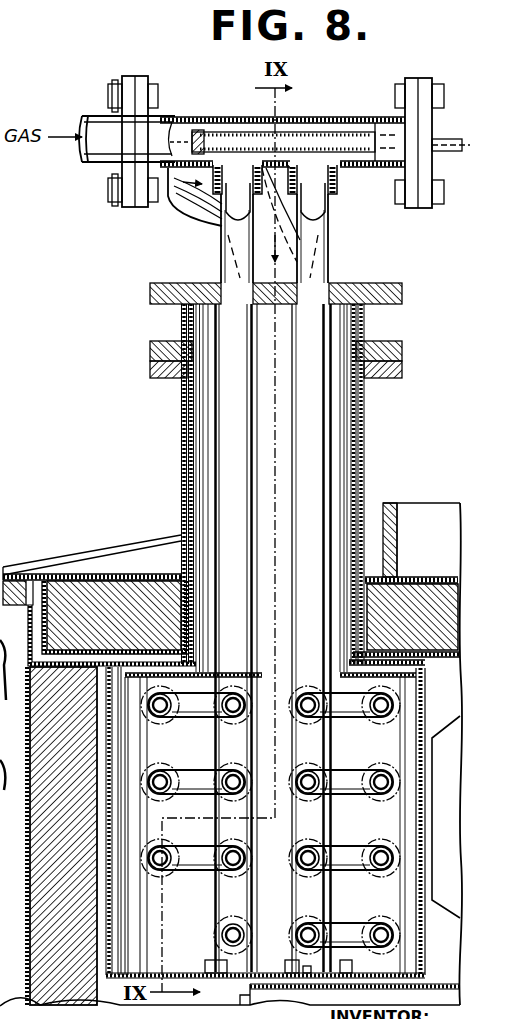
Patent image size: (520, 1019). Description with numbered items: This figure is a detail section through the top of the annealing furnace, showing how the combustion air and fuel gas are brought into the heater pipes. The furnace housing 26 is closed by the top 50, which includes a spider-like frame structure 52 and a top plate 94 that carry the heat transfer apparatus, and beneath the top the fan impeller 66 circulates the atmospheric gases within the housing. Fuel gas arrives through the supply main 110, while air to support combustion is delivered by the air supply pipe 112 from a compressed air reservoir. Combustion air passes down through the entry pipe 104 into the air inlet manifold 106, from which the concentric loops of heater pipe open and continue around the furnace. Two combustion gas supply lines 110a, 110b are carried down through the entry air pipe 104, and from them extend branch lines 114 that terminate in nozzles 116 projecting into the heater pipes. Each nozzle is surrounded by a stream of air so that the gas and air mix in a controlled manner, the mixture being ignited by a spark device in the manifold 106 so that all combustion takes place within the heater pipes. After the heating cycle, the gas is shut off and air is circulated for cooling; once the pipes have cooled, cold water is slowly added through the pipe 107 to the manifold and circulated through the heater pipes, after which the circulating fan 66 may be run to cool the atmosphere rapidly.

The furnace housing 26 is at (28, 978).
The top 50 is at (418, 575).
The spider-like frame structure 52 is at (395, 512).
The fan impeller 66 is at (452, 740).
The top plate 94 is at (100, 577).
The entry pipe 104 is at (195, 488).
The air inlet manifold 106 is at (215, 942).
The pipe 107 is at (318, 135).
The supply main 110 is at (104, 163).
The combustion gas supply line 110a is at (235, 443).
The combustion gas supply line 110b is at (312, 440).
The air supply pipe 112 is at (190, 207).
The branch lines 114 is at (200, 756).
The nozzles 116 is at (378, 812).